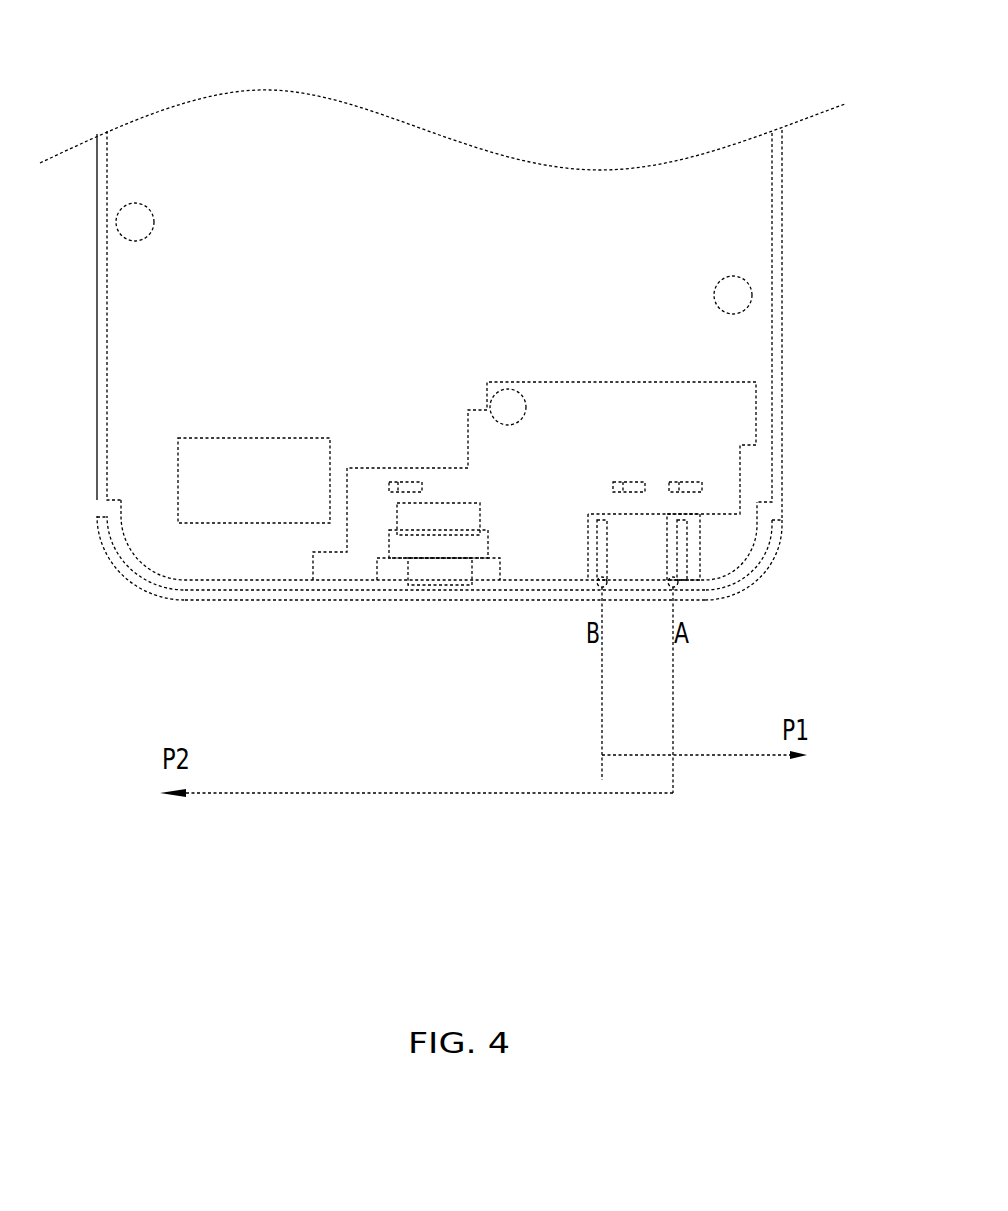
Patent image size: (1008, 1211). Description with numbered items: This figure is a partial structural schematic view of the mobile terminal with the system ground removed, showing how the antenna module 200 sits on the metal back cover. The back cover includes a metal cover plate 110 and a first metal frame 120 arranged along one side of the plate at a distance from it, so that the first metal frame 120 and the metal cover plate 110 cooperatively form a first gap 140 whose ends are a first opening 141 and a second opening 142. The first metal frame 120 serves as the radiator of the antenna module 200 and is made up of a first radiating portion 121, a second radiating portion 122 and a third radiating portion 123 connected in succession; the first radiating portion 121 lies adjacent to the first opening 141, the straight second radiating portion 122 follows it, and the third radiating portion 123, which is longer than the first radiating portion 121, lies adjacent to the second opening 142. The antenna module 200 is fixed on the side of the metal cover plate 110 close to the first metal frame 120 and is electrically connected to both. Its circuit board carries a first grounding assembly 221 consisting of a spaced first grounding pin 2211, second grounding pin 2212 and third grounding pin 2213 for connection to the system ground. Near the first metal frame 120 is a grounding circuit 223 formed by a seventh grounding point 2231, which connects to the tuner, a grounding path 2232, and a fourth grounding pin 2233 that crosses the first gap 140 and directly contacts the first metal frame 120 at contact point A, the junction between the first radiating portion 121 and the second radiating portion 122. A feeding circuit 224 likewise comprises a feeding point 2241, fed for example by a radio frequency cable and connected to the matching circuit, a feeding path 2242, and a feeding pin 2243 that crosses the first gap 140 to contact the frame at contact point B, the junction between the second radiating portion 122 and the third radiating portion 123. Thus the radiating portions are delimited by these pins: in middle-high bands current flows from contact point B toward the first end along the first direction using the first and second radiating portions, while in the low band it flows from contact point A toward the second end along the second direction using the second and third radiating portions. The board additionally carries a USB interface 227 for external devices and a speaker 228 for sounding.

The metal cover plate 110 is at (357, 178).
The first metal frame 120 is at (732, 699).
The first radiating portion 121 is at (781, 645).
The second radiating portion 122 is at (673, 650).
The third radiating portion 123 is at (597, 650).
The first gap 140 is at (193, 553).
The first opening 141 is at (766, 517).
The second opening 142 is at (102, 500).
The antenna module 200 is at (730, 403).
The first grounding assembly 221 is at (545, 384).
The first grounding pin 2211 is at (413, 482).
The second grounding pin 2212 is at (630, 482).
The third grounding pin 2213 is at (658, 409).
The grounding circuit 223 is at (789, 544).
The seventh grounding point 2231 is at (690, 524).
The grounding path 2232 is at (688, 551).
The fourth grounding pin 2233 is at (680, 585).
The feeding circuit 224 is at (536, 516).
The feeding point 2241 is at (598, 518).
The feeding path 2242 is at (597, 558).
The feeding pin 2243 is at (562, 564).
The USB interface 227 is at (440, 547).
The speaker 228 is at (222, 475).